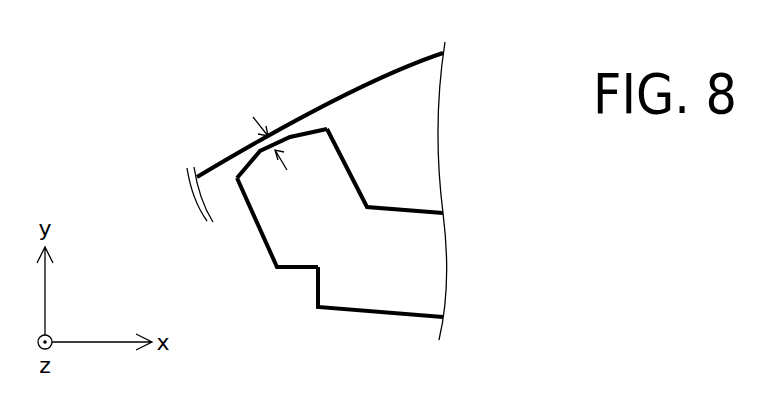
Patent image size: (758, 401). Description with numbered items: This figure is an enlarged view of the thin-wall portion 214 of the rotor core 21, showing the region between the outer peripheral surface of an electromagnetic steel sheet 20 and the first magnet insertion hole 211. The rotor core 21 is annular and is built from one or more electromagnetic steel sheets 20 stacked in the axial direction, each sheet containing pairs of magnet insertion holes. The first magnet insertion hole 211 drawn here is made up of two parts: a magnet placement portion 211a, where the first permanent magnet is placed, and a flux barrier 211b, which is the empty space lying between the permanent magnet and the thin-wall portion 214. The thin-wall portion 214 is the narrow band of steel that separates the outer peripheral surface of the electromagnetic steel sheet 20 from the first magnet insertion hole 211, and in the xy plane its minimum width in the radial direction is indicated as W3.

The rotor core 21 is at (330, 67).
The electromagnetic steel sheet 20 is at (413, 100).
The thin-wall portion 214 is at (292, 133).
The minimum width of the thin-wall portion W3 is at (249, 141).
The first magnet insertion hole 211 is at (335, 265).
The magnet placement portion 211a is at (380, 245).
The flux barrier 211b is at (307, 197).